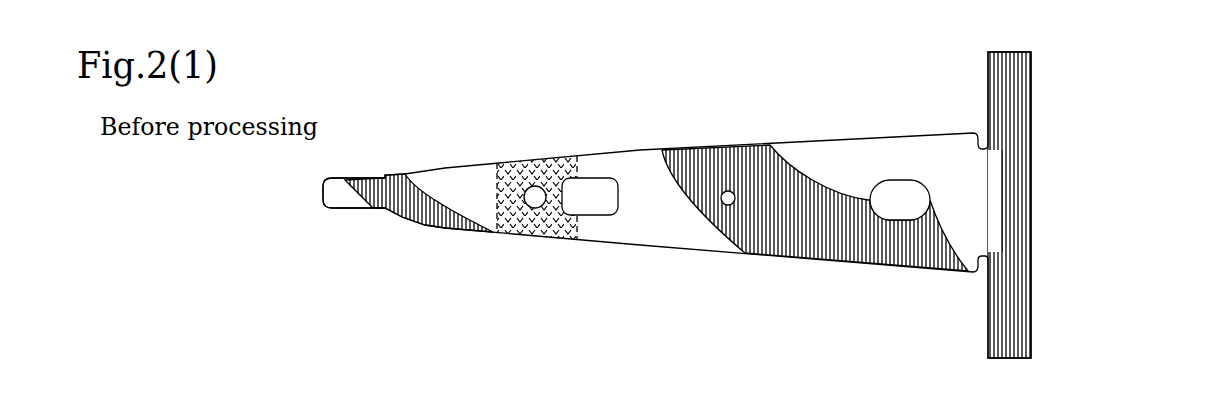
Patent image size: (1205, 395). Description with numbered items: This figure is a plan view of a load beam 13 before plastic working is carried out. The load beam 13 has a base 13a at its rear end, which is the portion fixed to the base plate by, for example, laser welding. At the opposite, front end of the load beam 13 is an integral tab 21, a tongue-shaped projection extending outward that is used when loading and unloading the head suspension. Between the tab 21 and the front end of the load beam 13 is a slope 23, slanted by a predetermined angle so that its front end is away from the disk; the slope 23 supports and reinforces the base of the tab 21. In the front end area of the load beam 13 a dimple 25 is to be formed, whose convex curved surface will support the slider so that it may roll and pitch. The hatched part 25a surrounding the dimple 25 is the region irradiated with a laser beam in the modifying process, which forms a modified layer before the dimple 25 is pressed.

The load beam 13 is at (793, 88).
The base 13a is at (1010, 83).
The tab 21 is at (321, 192).
The slope 23 is at (409, 170).
The dimple 25 is at (535, 186).
The hatched part 25a is at (563, 155).